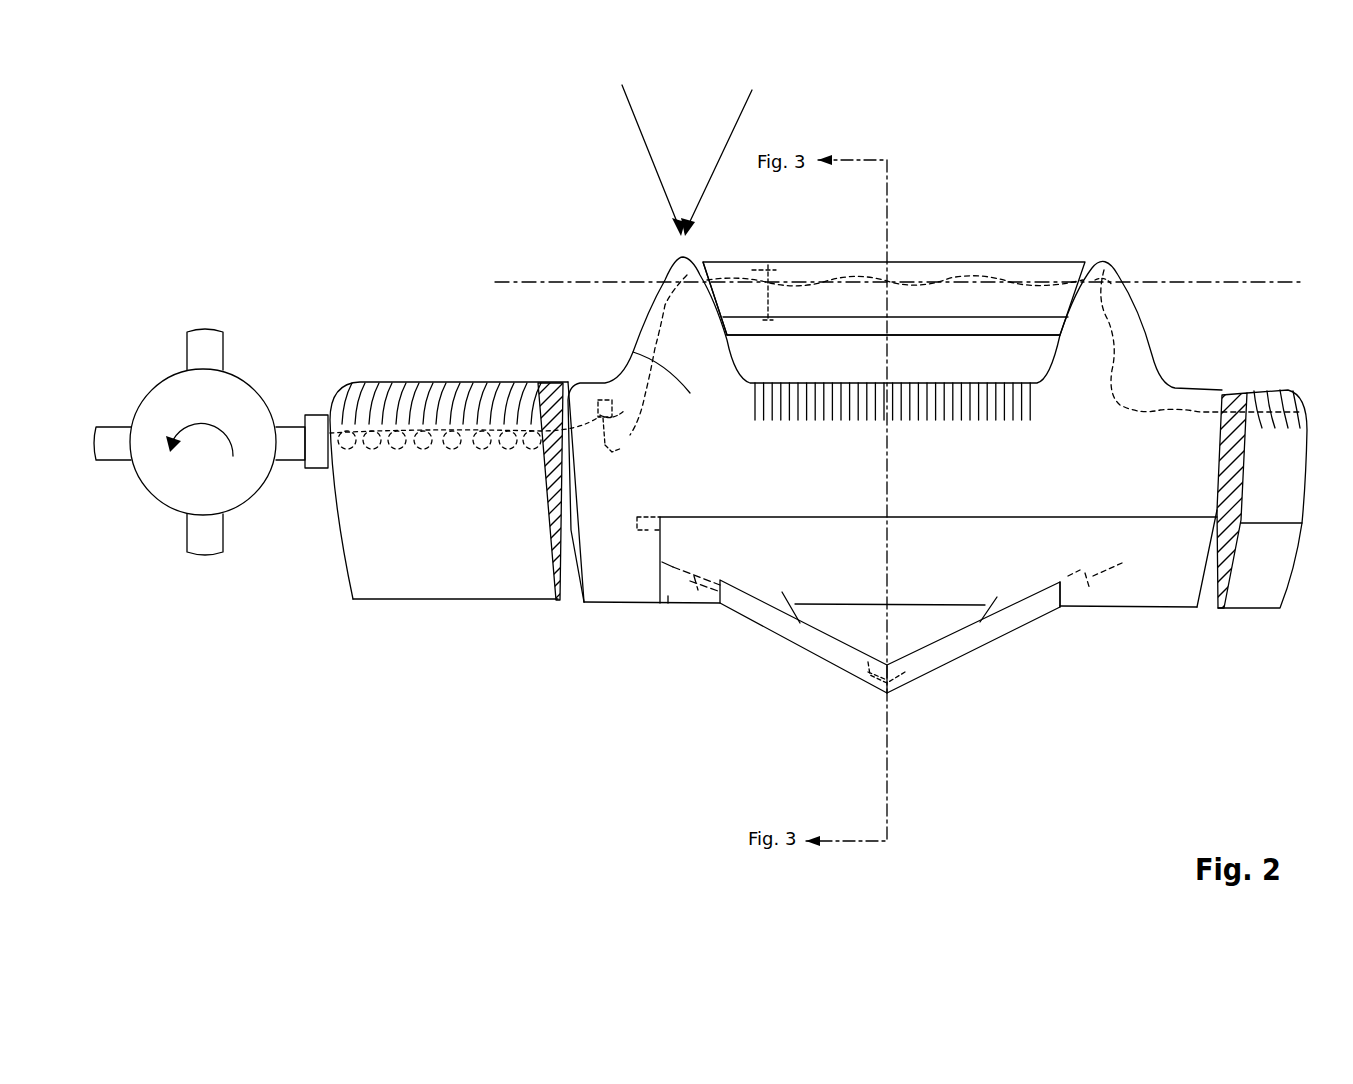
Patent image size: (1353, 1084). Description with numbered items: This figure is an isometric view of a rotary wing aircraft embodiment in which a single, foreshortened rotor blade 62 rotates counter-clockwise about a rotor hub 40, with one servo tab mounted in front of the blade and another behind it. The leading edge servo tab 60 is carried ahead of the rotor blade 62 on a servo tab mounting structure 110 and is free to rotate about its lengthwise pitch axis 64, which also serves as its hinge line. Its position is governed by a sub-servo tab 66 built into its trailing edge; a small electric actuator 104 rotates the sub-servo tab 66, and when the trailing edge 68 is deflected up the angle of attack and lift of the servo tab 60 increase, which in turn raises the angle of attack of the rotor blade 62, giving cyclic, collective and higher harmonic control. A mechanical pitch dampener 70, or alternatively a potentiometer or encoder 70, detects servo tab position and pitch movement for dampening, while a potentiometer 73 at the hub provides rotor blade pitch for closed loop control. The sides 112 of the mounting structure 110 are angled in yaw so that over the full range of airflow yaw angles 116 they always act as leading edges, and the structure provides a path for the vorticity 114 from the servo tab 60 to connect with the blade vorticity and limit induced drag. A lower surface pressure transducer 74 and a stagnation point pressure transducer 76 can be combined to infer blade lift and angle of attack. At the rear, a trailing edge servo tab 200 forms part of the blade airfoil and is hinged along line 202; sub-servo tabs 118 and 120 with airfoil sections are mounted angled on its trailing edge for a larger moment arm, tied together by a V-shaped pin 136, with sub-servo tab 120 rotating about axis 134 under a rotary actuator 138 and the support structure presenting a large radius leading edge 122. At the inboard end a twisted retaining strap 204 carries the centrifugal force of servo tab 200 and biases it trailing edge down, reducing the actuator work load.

The rotor hub 40 is at (245, 400).
The potentiometer 73 is at (320, 460).
The servo tab 60 is at (907, 272).
The rotor blade 62 is at (1257, 390).
The pitch axis 64 is at (1230, 282).
The sub-servo tab 66 is at (853, 330).
The trailing edge 68 is at (937, 338).
The mechanical pitch dampener 70 is at (1105, 264).
The pressure transducer 74 is at (622, 440).
The pressure transducer 76 is at (610, 396).
The electric actuator 104 is at (760, 270).
The servo tab mounting structure 110 is at (683, 334).
The sides 112 is at (722, 352).
The vorticity 114 is at (1128, 403).
The airflow yaw angles 116 is at (742, 100).
The sub-servo tab 118 is at (810, 645).
The sub-servo tab 120 is at (933, 663).
The leading edge 122 is at (792, 603).
The axis 134 is at (1097, 577).
The V-shaped pin 136 is at (905, 665).
The rotary actuator 138 is at (1086, 592).
The trailing edge servo tab 200 is at (668, 605).
The hinge line 202 is at (720, 517).
The twisted retaining strap 204 is at (644, 515).